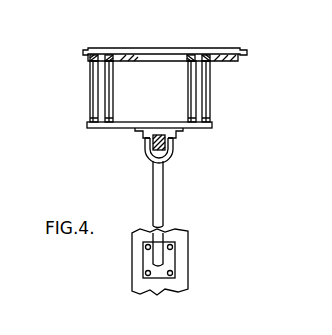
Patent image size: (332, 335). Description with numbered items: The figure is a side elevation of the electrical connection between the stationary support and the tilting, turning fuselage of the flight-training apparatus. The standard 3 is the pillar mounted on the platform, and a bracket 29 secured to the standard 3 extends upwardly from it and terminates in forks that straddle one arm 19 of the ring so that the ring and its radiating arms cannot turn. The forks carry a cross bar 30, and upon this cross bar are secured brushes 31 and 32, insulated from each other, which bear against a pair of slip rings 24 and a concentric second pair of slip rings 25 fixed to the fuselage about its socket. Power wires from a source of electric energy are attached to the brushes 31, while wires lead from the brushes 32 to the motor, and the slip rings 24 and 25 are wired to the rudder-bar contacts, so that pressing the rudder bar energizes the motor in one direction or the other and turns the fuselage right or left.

The standard 3 is at (189, 270).
The arm 19 is at (153, 148).
The slip rings 24 is at (112, 62).
The second pair of slip rings 25 is at (203, 62).
The bracket 29 is at (163, 202).
The cross bar 30 is at (112, 129).
The brushes 31 is at (202, 97).
The brushes 32 is at (105, 86).